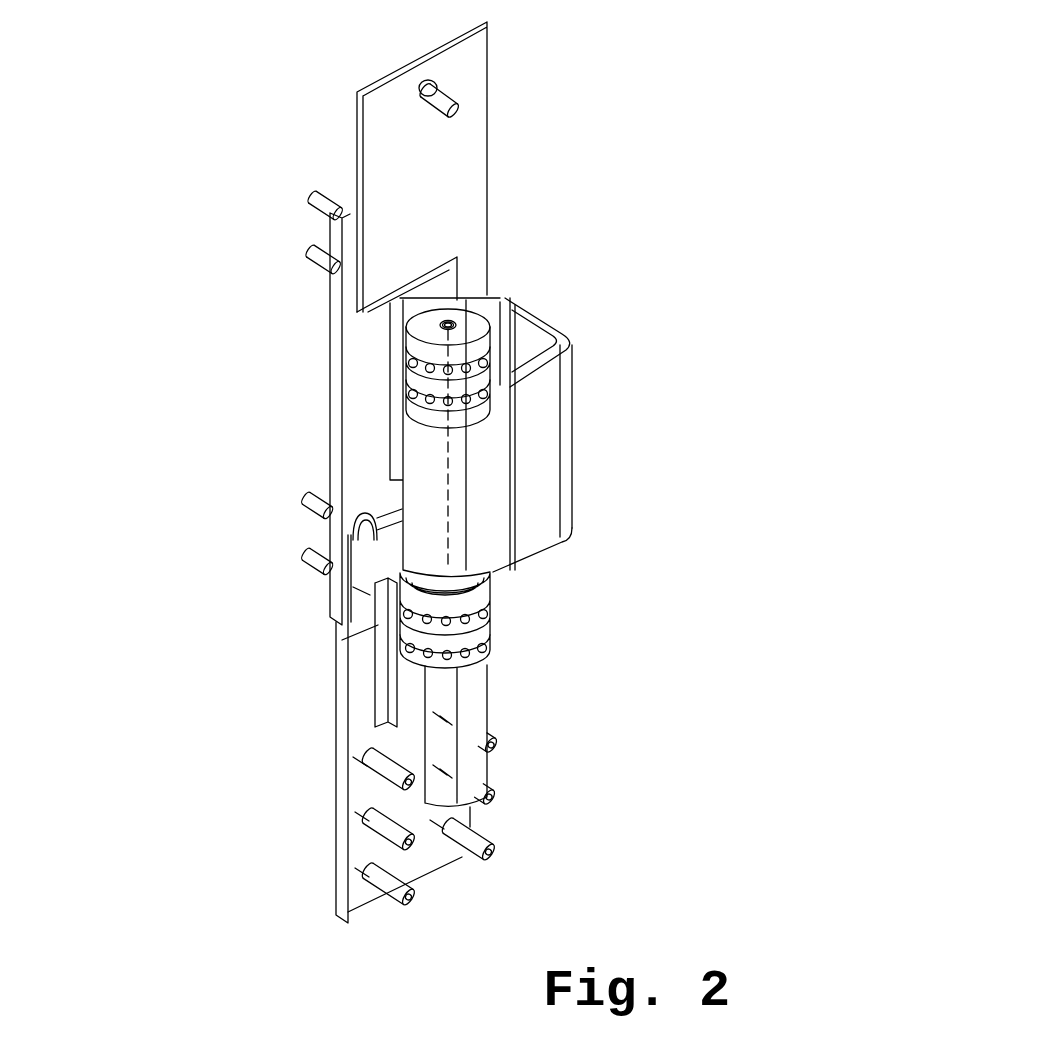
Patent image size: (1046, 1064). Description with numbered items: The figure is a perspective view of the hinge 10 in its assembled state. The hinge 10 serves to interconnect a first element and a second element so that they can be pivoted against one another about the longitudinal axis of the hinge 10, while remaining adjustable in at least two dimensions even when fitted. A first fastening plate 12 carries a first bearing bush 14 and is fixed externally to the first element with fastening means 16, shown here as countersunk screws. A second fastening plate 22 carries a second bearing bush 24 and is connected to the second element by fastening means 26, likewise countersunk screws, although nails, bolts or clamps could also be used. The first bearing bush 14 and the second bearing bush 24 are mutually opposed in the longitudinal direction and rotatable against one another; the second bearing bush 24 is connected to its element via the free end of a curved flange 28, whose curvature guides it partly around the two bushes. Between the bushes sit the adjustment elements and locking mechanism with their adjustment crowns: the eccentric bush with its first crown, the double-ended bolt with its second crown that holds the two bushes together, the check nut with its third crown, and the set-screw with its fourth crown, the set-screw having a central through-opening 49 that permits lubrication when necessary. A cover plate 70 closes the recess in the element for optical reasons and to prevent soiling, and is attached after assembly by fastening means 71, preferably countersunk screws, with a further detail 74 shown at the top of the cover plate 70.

The hinge 10 is at (272, 340).
The first fastening plate 12 is at (340, 698).
The first bearing bush 14 is at (465, 700).
The fastening means 16 is at (494, 803).
The second fastening plate 22 is at (330, 418).
The second bearing bush 24 is at (457, 457).
The fastening means 26 is at (310, 556).
The curved flange 28 is at (540, 518).
The central through-opening 49 is at (452, 322).
The cover plate 70 is at (437, 195).
The fastening means 71 is at (460, 107).
The pin head 74 is at (438, 75).